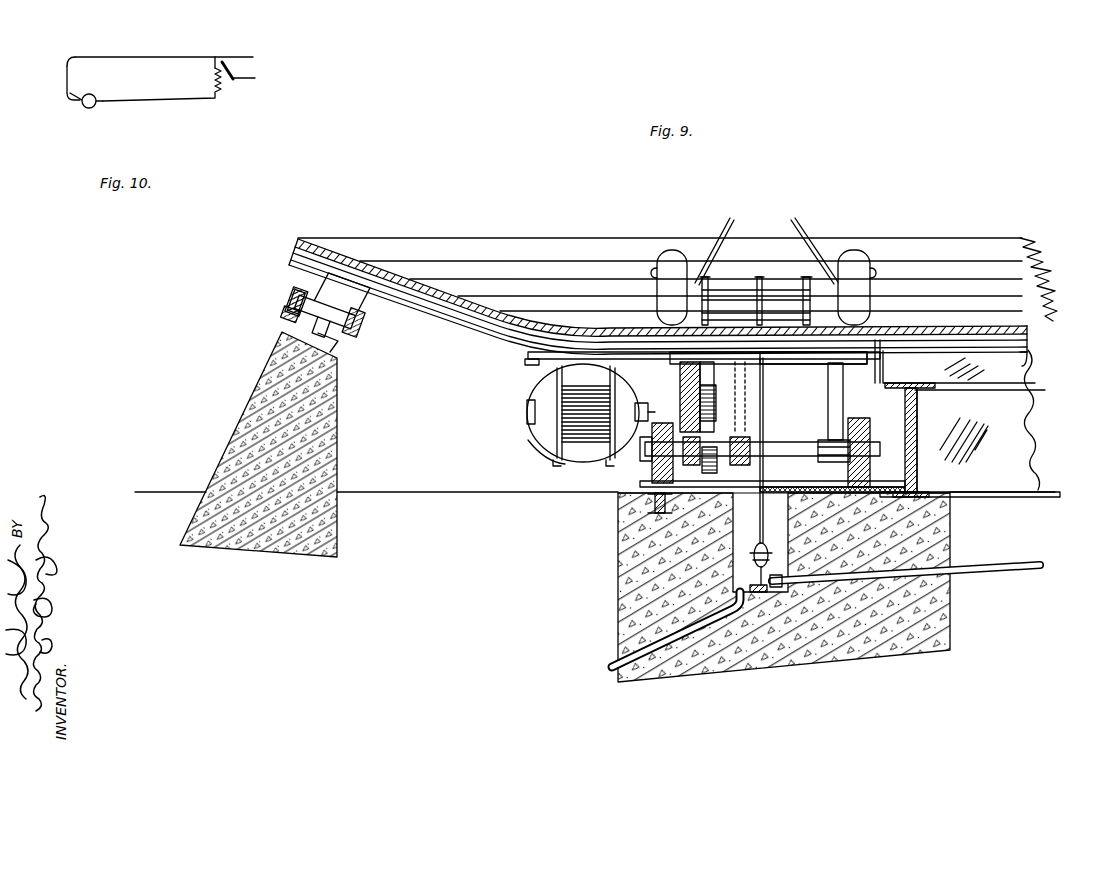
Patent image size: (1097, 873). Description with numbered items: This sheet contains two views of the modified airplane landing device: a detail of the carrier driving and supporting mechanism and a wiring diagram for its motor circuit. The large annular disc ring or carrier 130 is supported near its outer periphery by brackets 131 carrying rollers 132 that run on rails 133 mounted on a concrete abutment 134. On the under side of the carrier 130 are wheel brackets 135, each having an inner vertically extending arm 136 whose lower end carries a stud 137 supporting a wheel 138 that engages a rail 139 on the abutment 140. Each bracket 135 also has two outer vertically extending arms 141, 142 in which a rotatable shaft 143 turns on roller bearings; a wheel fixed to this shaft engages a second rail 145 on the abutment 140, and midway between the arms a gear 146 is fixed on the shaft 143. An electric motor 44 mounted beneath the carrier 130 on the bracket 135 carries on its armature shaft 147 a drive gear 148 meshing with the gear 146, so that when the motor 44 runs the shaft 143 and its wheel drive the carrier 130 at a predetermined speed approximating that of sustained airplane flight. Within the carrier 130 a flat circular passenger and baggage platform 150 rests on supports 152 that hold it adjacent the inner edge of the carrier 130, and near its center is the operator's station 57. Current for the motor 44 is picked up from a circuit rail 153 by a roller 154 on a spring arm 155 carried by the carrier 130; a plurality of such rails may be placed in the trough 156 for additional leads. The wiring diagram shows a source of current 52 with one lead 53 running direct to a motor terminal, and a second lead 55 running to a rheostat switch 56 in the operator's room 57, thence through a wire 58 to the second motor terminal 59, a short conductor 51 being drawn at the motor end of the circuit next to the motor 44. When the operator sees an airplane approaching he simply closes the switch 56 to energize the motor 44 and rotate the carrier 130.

In FIG. 10, the electric motor 44 is at (84, 108).
In FIG. 9, the electric motor 44 is at (540, 425).
In FIG. 10, the conductor 51 is at (74, 104).
In FIG. 10, the source of current 52 is at (282, 53).
In FIG. 10, the lead 53 is at (166, 57).
In FIG. 10, the second lead 55 is at (267, 76).
In FIG. 10, the rheostat switch 56 is at (228, 87).
In FIG. 10, the operator's room 57 is at (165, 91).
In FIG. 10, the wire 58 is at (177, 115).
In FIG. 9, the wire 58 is at (965, 578).
In FIG. 10, the second motor terminal 59 is at (102, 104).
In FIG. 9, the carrier 130 is at (565, 250).
In FIG. 9, the bracket 131 is at (358, 313).
In FIG. 9, the roller 132 is at (298, 322).
In FIG. 9, the rail 133 is at (328, 344).
In FIG. 9, the abutment 134 is at (322, 446).
In FIG. 9, the bracket 135 is at (528, 356).
In FIG. 9, the inner vertically extending arm 136 is at (843, 400).
In FIG. 9, the stud 137 is at (818, 452).
In FIG. 9, the wheel 138 is at (858, 430).
In FIG. 9, the rail 139 is at (872, 486).
In FIG. 9, the abutment 140 is at (628, 600).
In FIG. 9, the outer vertically extending arm 141 is at (700, 378).
In FIG. 9, the outer vertically extending arm 142 is at (700, 401).
In FIG. 9, the rotatable shaft 143 is at (652, 463).
In FIG. 9, the second rail 145 is at (662, 492).
In FIG. 9, the gear 146 is at (656, 512).
In FIG. 9, the armature shaft 147 is at (556, 455).
In FIG. 9, the drive gear 148 is at (788, 364).
In FIG. 9, the platform 150 is at (1027, 340).
In FIG. 9, the support 152 is at (1018, 446).
In FIG. 9, the circuit rail 153 is at (769, 560).
In FIG. 9, the roller 154 is at (806, 284).
In FIG. 9, the spring arm 155 is at (842, 262).
In FIG. 9, the trough 156 is at (740, 562).